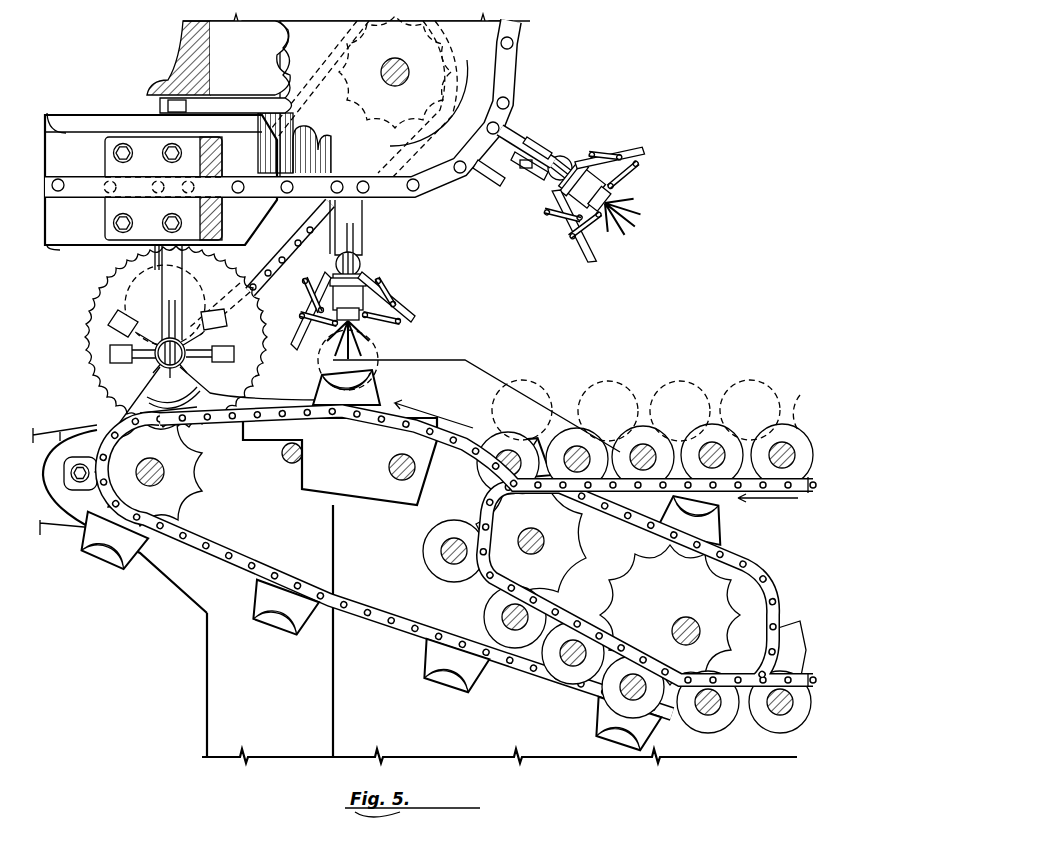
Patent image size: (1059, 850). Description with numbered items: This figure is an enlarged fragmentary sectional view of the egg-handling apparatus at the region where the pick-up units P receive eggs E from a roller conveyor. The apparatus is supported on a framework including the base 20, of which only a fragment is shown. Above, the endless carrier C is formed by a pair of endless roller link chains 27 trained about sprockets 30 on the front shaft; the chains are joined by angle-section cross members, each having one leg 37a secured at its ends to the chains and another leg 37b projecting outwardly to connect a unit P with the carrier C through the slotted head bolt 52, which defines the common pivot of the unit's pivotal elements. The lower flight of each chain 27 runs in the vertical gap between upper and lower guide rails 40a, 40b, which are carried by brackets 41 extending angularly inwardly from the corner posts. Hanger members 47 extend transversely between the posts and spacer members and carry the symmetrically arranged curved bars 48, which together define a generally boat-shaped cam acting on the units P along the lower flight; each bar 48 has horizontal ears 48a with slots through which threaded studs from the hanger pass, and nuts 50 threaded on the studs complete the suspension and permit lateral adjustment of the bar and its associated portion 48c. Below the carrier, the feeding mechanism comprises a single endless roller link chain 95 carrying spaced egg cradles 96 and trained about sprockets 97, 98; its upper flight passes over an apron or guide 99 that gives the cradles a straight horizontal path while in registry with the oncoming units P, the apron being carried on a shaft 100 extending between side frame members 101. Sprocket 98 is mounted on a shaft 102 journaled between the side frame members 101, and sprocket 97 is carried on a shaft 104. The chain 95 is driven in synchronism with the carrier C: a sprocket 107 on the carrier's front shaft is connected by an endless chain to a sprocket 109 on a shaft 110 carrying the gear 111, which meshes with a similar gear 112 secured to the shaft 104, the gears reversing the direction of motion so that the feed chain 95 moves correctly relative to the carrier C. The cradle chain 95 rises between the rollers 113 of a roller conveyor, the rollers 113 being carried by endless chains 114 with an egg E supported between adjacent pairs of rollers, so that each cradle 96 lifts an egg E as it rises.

The base 20 is at (202, 711).
The endless roller link chains 27 is at (517, 55).
The sprockets 30 is at (495, 82).
The leg of cross member 37a is at (493, 185).
The outwardly projecting leg of cross member 37b is at (520, 172).
The upper guide rail 40a is at (92, 120).
The lower guide rail 40b is at (72, 247).
The brackets 41 is at (238, 175).
The hanger members 47 is at (186, 58).
The curved camming bars 48 is at (121, 105).
The horizontal ears 48a is at (205, 94).
The link bar 48c is at (260, 269).
The nuts 50 is at (200, 106).
The slotted head bolt 52 is at (545, 132).
The endless roller link chain 95 is at (404, 633).
The egg cradles 96 is at (378, 395).
The sprocket 97 is at (185, 490).
The sprocket 98 is at (762, 605).
The apron or guide 99 is at (366, 490).
The shaft 100 is at (418, 472).
The side frame members 101 is at (470, 360).
The shaft 102 is at (698, 624).
The shaft 104 is at (165, 470).
The sprocket 107 is at (399, 140).
The sprocket 109 is at (188, 292).
The shaft 110 is at (205, 312).
The gear 111 is at (100, 309).
The gear 112 is at (109, 411).
The rollers 113 is at (660, 448).
The endless chains 114 is at (768, 493).
The egg pick-up breaking and opening units P is at (399, 284).
The endless carrier C is at (451, 195).
The eggs E is at (646, 380).